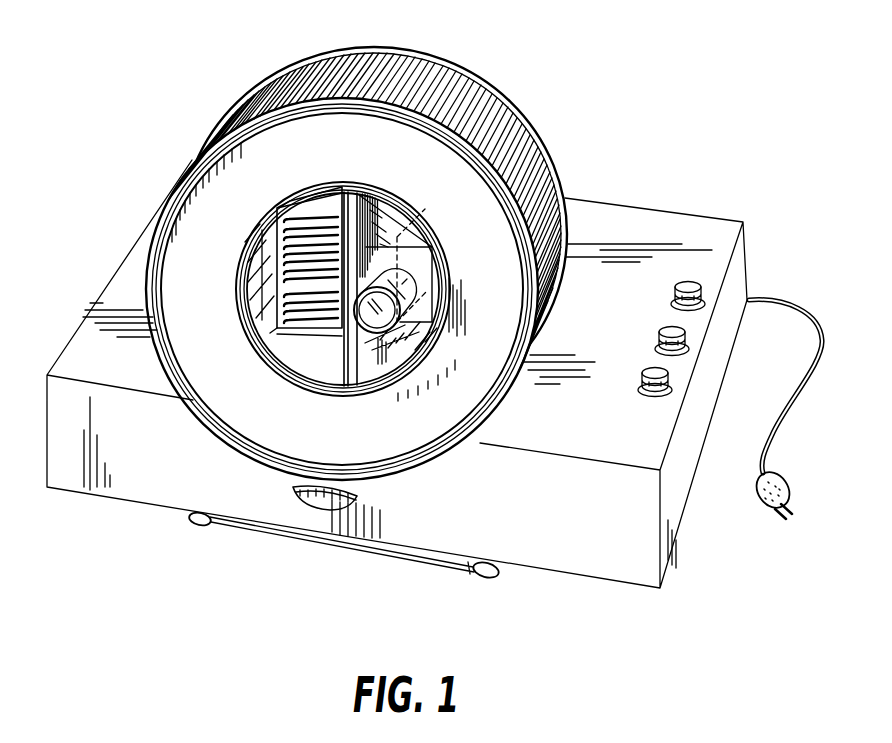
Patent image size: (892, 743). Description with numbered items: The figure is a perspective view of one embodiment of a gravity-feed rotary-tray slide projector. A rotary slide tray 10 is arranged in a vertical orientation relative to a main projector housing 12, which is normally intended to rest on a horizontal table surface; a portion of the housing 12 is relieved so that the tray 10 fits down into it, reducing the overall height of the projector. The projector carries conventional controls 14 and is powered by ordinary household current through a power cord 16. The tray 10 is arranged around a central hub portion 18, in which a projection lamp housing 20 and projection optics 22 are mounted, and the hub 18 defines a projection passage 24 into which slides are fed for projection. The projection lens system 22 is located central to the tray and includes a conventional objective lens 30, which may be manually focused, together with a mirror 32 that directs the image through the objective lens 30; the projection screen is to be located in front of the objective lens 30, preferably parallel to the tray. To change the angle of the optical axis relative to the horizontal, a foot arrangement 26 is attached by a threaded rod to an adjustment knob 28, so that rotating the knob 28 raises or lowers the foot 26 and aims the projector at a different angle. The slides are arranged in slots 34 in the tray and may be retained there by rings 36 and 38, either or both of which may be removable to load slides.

The rotary slide tray 10 is at (353, 243).
The main projector housing 12 is at (660, 212).
The controls 14 is at (641, 370).
The power cord 16 is at (808, 370).
The central hub portion 18 is at (270, 277).
The projection lamp housing 20 is at (272, 333).
The projection optics 22 is at (430, 281).
The projection passage 24 is at (352, 384).
The foot arrangement 26 is at (457, 566).
The adjustment knob 28 is at (358, 496).
The objective lens 30 is at (406, 332).
The mirror 32 is at (424, 210).
The slots 34 is at (377, 47).
The ring 36 is at (463, 80).
The ring 38 is at (185, 160).